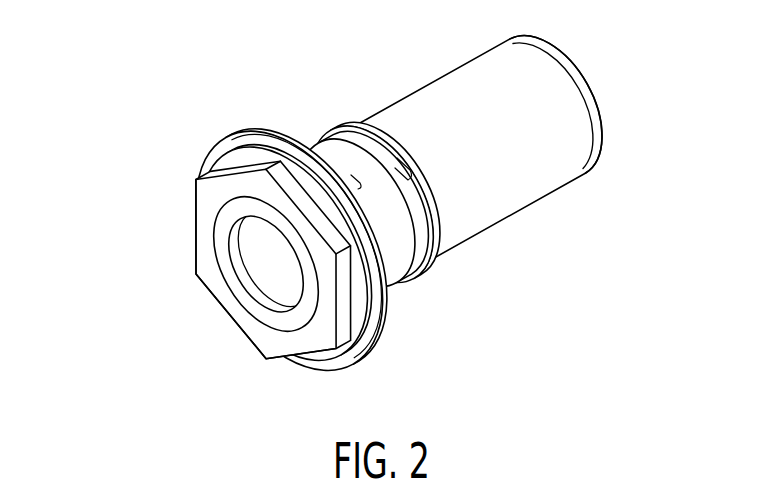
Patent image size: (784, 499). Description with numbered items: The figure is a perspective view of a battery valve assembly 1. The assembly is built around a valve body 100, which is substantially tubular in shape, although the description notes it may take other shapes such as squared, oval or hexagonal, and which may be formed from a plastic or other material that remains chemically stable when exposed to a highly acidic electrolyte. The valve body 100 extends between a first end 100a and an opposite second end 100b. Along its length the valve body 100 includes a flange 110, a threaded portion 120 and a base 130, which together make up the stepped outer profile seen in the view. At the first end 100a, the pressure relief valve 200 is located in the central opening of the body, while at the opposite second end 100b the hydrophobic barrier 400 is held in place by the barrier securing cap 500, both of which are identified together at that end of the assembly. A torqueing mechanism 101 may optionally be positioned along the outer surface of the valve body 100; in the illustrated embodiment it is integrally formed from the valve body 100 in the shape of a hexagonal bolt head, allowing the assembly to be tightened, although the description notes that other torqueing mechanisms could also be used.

The battery valve assembly 1 is at (381, 209).
The valve body 100 is at (381, 209).
The first end 100a is at (196, 208).
The second end 100b is at (596, 156).
The torqueing mechanism 101 is at (343, 313).
The flange 110 is at (378, 352).
The threaded portion 120 is at (345, 118).
The base 130 is at (512, 193).
The pressure relief valve 200 is at (263, 287).
The hydrophobic barrier 400 is at (626, 106).
The barrier securing cap 500 is at (598, 96).